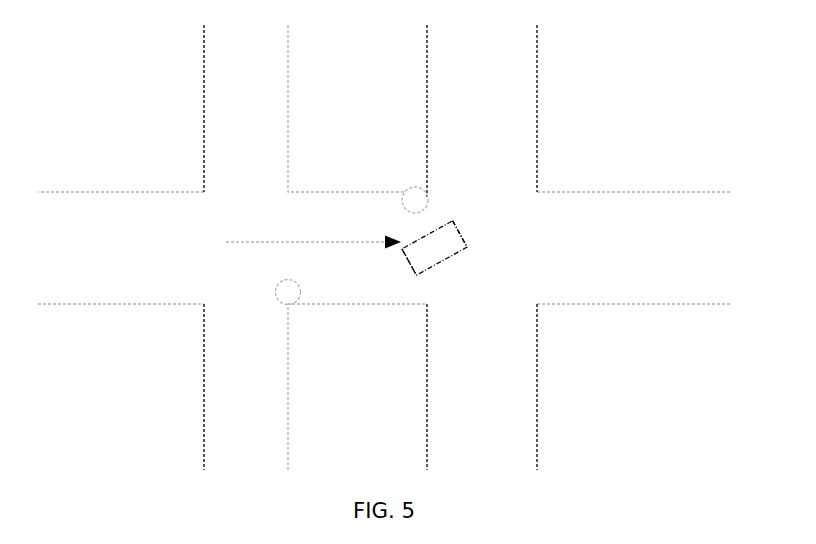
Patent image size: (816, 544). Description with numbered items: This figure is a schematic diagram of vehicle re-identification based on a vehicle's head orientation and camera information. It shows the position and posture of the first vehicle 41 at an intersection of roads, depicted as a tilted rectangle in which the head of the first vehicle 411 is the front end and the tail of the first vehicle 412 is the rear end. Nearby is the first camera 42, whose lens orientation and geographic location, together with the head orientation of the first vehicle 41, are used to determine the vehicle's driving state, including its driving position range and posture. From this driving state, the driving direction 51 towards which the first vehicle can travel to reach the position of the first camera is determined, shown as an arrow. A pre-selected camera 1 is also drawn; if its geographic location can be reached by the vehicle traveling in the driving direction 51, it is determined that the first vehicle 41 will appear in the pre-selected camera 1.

The pre-selected camera 1 is at (287, 298).
The first vehicle 41 is at (448, 257).
The head of the first vehicle 411 is at (461, 232).
The tail of the first vehicle 412 is at (407, 260).
The first camera 42 is at (413, 190).
The driving direction 51 is at (313, 254).